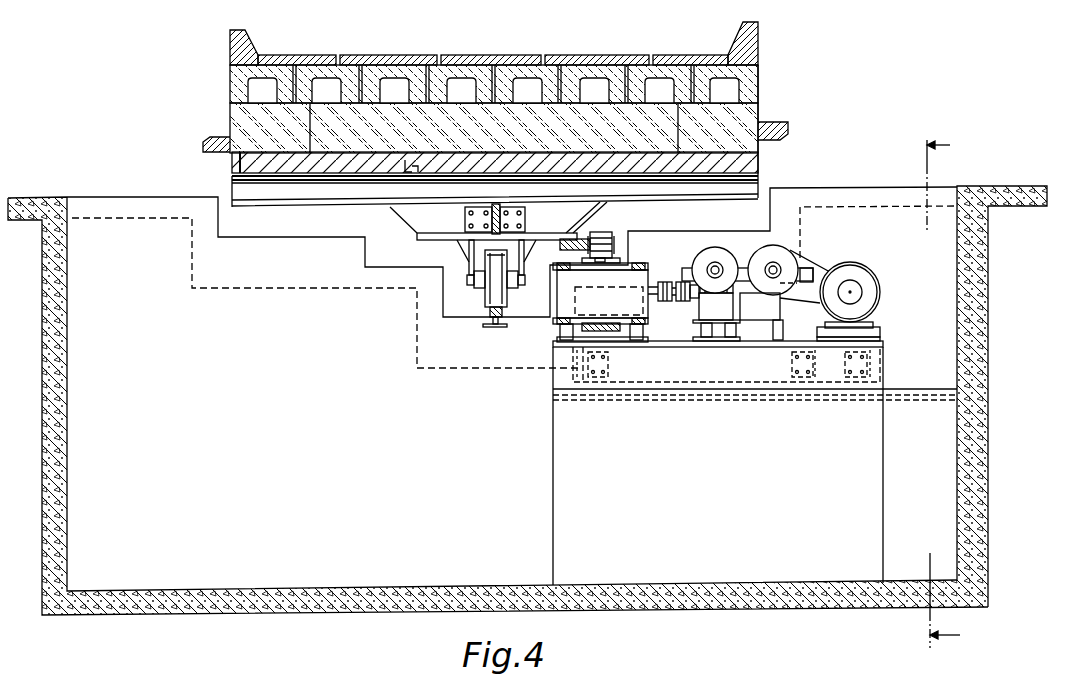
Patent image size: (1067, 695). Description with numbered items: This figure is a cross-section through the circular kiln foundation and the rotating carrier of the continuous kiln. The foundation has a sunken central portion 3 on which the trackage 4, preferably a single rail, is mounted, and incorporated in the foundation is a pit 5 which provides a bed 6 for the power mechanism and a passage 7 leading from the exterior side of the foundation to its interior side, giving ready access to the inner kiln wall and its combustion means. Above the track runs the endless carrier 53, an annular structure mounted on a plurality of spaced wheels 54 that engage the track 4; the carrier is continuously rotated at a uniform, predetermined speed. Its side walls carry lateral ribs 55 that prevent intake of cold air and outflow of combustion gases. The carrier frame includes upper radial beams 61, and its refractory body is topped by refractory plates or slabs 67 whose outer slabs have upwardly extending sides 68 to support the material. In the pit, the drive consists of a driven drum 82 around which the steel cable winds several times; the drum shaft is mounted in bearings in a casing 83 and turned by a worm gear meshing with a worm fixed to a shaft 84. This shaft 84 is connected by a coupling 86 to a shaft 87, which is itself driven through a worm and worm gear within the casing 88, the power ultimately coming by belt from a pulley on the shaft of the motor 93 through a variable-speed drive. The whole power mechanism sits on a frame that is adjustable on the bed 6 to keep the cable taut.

The sunken central portion 3 is at (953, 390).
The trackage 4 is at (505, 312).
The pit 5 is at (1002, 396).
The bed 6 is at (837, 388).
The passage 7 is at (498, 401).
The endless carrier 53 is at (475, 84).
The wheels 54 is at (494, 286).
The lateral ribs 55 is at (214, 138).
The upper radial beams 61 is at (314, 202).
The refractory plates or slabs 67 is at (389, 36).
The upwardly extending sides 68 is at (231, 40).
The drum 82 is at (602, 235).
The casing 83 is at (639, 330).
The shaft 84 is at (653, 284).
The coupling 86 is at (684, 305).
The shaft 87 is at (697, 310).
The casing 88 is at (727, 249).
The motor 93 is at (879, 287).